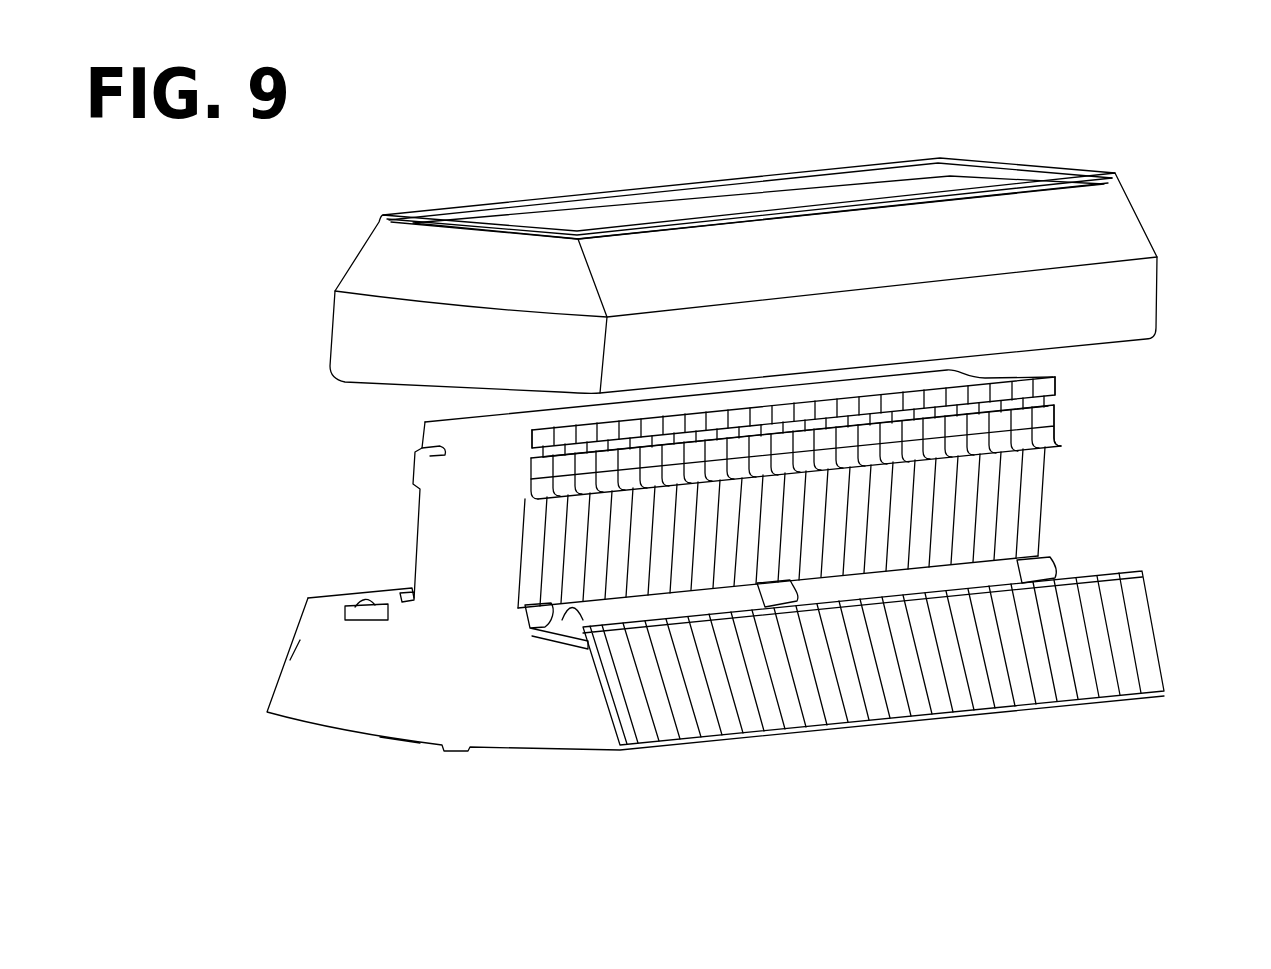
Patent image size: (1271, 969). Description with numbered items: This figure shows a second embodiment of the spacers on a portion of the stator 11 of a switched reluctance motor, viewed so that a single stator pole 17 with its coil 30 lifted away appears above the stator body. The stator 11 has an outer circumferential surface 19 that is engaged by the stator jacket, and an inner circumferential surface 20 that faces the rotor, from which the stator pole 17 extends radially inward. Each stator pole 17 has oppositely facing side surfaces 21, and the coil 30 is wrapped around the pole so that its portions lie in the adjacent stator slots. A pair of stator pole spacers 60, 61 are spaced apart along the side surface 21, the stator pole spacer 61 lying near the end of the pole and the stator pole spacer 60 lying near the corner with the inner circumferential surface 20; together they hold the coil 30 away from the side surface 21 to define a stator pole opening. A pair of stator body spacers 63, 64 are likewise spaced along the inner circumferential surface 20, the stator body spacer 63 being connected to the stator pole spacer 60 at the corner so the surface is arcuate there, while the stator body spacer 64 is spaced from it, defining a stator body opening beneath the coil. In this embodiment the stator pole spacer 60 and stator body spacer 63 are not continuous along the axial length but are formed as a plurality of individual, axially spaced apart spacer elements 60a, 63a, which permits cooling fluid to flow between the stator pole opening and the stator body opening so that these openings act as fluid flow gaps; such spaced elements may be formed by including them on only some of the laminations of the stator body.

The coil 30 is at (1128, 230).
The stator pole 17 is at (450, 453).
The stator pole spacer 61 is at (1067, 428).
The side surface 21 is at (1037, 477).
The stator pole spacer 60 is at (405, 602).
The spacer element 60a is at (522, 610).
The inner circumferential surface 20 is at (360, 600).
The stator body spacer 63 is at (390, 620).
The spacer element 63a is at (532, 633).
The stator body spacer 64 is at (317, 612).
The stator 11 is at (350, 720).
The outer circumferential surface 19 is at (397, 745).